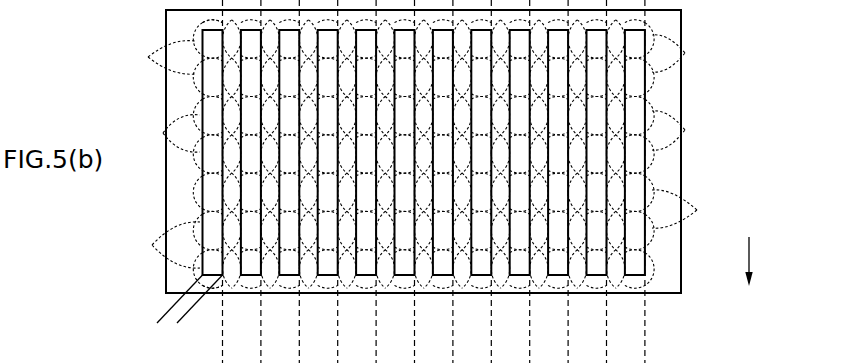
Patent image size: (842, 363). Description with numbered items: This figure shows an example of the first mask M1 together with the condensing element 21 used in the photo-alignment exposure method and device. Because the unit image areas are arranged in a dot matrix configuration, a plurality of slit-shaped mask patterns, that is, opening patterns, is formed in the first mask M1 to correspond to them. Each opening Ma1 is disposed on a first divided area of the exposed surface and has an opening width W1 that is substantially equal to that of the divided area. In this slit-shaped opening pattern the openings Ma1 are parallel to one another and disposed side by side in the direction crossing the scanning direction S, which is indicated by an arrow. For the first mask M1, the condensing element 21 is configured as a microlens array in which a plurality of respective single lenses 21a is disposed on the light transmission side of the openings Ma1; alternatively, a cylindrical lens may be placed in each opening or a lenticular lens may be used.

The single lens 21a is at (148, 57).
The condensing element 21 is at (476, 151).
The first mask M1 is at (456, 151).
The opening Ma1 is at (204, 112).
The opening width W1 is at (195, 323).
The scanning direction S is at (748, 274).